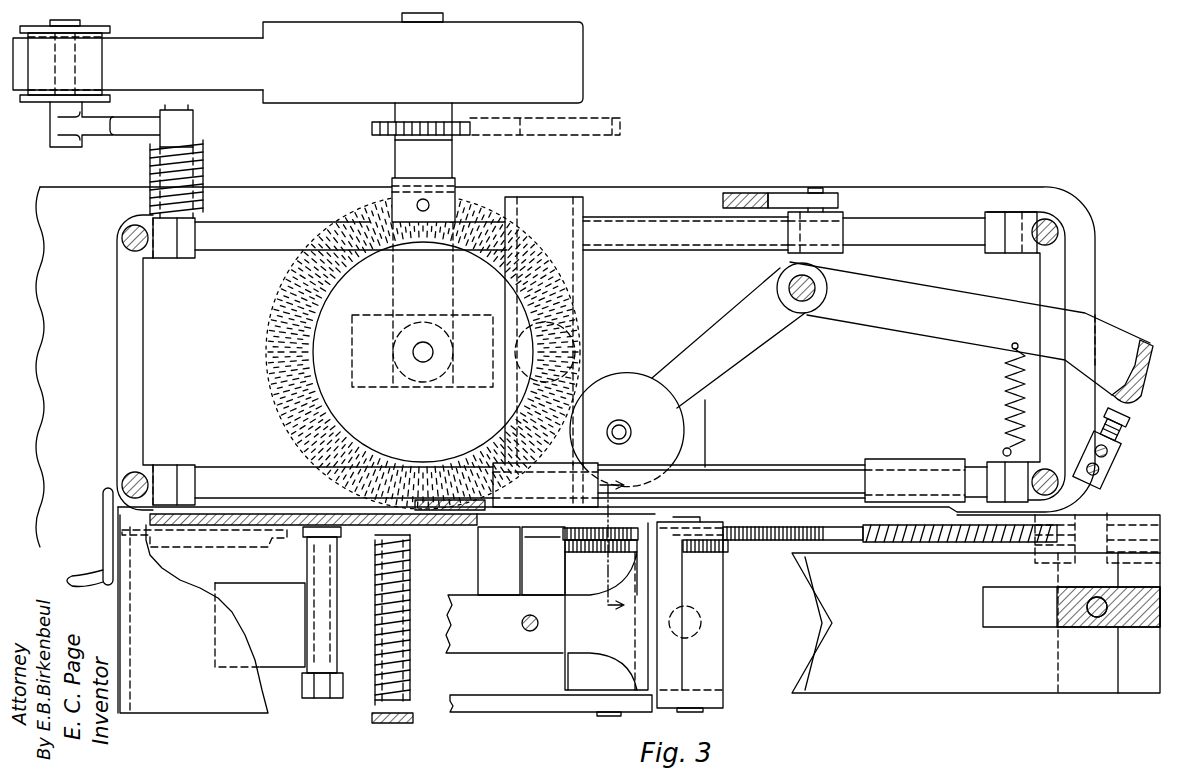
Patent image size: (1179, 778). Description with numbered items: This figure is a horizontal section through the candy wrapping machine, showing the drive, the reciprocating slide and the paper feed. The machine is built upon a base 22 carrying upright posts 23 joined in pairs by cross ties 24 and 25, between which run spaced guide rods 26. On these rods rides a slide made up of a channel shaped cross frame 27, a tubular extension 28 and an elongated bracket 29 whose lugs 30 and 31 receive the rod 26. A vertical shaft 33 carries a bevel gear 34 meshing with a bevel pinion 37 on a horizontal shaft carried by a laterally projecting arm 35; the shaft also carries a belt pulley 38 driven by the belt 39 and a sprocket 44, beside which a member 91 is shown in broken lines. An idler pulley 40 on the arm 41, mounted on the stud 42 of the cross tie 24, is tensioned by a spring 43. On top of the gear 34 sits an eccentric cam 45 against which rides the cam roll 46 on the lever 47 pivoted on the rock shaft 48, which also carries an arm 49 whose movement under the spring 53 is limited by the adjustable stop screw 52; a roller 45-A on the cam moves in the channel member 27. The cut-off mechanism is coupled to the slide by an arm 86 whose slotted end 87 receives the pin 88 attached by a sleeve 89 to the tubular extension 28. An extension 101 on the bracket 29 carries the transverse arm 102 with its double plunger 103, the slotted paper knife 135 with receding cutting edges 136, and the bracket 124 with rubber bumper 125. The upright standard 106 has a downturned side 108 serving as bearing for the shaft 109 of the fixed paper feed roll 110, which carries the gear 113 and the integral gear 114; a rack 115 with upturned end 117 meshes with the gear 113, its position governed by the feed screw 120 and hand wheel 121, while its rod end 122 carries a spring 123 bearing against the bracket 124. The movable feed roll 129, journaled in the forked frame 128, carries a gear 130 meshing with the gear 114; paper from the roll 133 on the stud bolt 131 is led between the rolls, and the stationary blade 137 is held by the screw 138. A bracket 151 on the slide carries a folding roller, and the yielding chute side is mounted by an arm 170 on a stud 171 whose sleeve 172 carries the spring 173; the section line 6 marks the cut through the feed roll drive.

The section line 6— 6 is at (618, 545).
The base 22 is at (565, 450).
The upright posts 23 is at (1048, 222).
The cross tie 24 is at (135, 362).
The cross tie 25 is at (1026, 356).
The guide rods 26 is at (591, 358).
The channel shaped cross frame 27 is at (585, 288).
The tubular extension 28 is at (693, 238).
The elongated bracket 29 is at (772, 470).
The lug 30 is at (545, 485).
The lug 31 is at (915, 480).
The vertical shaft 33 is at (423, 352).
The bevel gear 34 is at (266, 364).
The laterally projecting arm 35 is at (396, 300).
The bevel pinion 37 is at (470, 206).
The belt pulley 38 is at (551, 28).
The belt 39 is at (138, 64).
The idler pulley 40 is at (65, 61).
The arm 41 is at (91, 128).
The stud 42 is at (186, 112).
The spring 43 is at (197, 186).
The sprocket 44 is at (455, 135).
The eccentric cam 45 is at (335, 398).
The roller 45-A is at (530, 375).
The cam roll 46 is at (637, 430).
The lever 47 is at (728, 338).
The rock shaft 48 is at (820, 292).
The arm 49 is at (971, 332).
The adjustable stop screw 52 is at (1120, 437).
The spring 53 is at (1008, 405).
The arm 86 is at (787, 196).
The slotted end 87 is at (840, 200).
The pin 88 is at (816, 188).
The sleeve 89 is at (845, 251).
The rack 91 is at (590, 122).
The extension 101 is at (1017, 508).
The transverse arm 102 is at (1137, 623).
The double plunger 103 is at (1122, 594).
The upright standard 106 is at (499, 561).
The downturned side 108 is at (551, 704).
The shaft 109 is at (605, 717).
The fixed rotatable paper feed roll 110 is at (602, 671).
The gear 113 is at (615, 530).
The gear 114 is at (578, 553).
The rack 115 is at (740, 528).
The upturned end 117 is at (530, 540).
The feed screw 120 is at (155, 548).
The hand wheel 121 is at (103, 551).
The rod end 122 is at (945, 540).
The spring 123 is at (920, 540).
The bracket 124 is at (1120, 550).
The rubber bumper 125 is at (1125, 513).
The forked frame 128 is at (705, 713).
The movable paper feed roll 129 is at (690, 612).
The gear 130 is at (730, 549).
The stud bolt 131 is at (312, 698).
The roll of paper 133 is at (212, 614).
The slotted paper knife 135 is at (976, 623).
The cutting edges 136 is at (825, 620).
The stationary blade 137 is at (606, 606).
The screw 138 is at (525, 630).
The bracket 151 is at (402, 524).
The arm 170 is at (378, 723).
The stud 171 is at (418, 570).
The sleeve 172 is at (420, 587).
The spring 173 is at (418, 684).